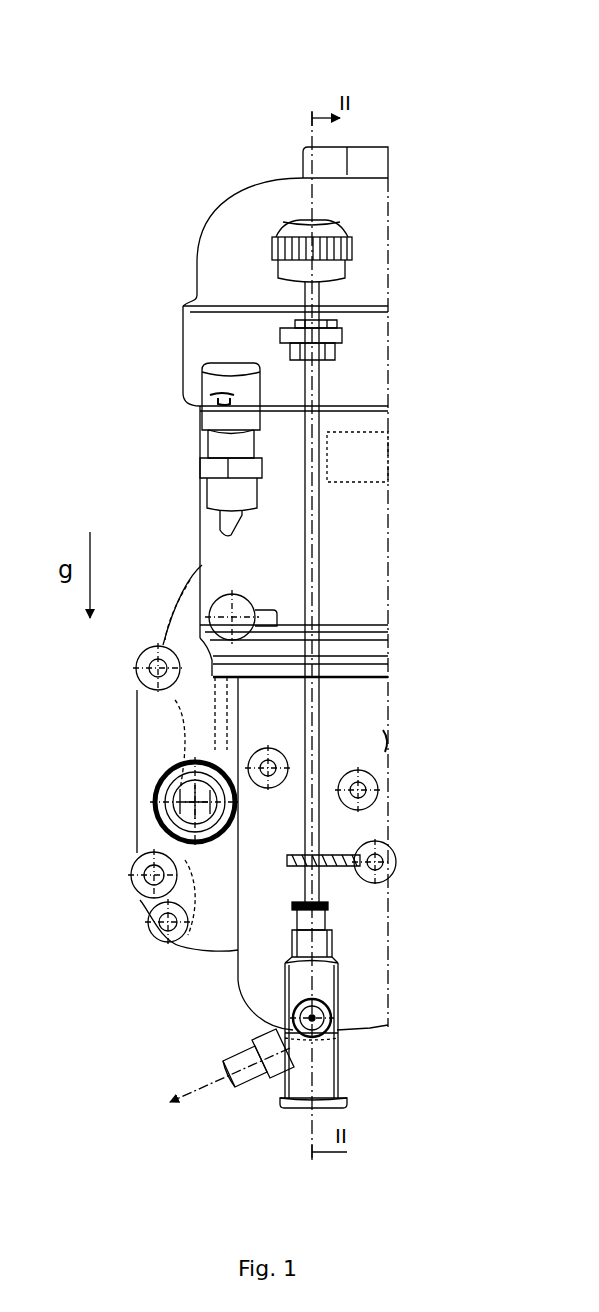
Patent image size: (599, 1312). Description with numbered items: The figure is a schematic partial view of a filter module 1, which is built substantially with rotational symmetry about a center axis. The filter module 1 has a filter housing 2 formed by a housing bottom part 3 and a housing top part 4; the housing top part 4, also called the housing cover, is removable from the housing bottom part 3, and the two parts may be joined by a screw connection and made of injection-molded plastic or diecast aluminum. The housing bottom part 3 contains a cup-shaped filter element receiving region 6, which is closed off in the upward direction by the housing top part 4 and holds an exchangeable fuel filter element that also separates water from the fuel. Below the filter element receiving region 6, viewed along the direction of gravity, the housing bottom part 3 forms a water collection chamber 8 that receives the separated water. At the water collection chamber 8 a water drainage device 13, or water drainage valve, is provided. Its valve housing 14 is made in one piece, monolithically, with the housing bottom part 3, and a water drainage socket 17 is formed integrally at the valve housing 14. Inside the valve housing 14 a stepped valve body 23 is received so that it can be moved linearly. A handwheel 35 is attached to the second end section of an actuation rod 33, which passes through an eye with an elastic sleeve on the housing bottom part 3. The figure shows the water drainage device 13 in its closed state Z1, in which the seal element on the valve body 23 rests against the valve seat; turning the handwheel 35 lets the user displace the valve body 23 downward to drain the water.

The filter module 1 is at (309, 78).
The filter housing 2 is at (120, 247).
The housing bottom part 3 is at (180, 318).
The housing top part 4 is at (197, 273).
The filter element receiving region 6 is at (200, 523).
The water collection chamber 8 is at (238, 983).
The water drainage device 13 is at (365, 1049).
The valve housing 14 is at (350, 1068).
The water drainage socket 17 is at (228, 1090).
The valve body 23 is at (294, 1110).
The actuation rod 33 is at (320, 555).
The handwheel 35 is at (300, 218).
The closed state Z1 is at (365, 1127).